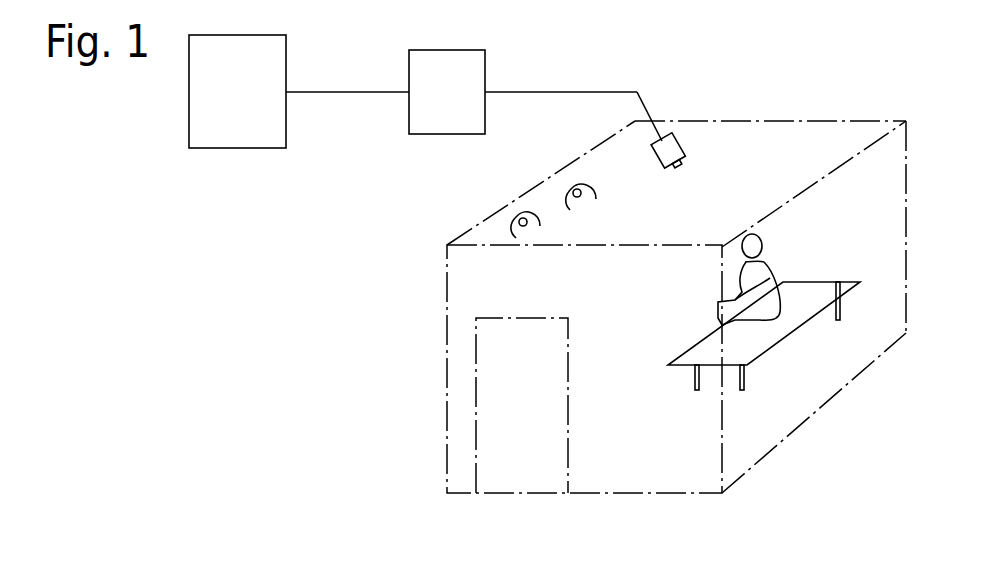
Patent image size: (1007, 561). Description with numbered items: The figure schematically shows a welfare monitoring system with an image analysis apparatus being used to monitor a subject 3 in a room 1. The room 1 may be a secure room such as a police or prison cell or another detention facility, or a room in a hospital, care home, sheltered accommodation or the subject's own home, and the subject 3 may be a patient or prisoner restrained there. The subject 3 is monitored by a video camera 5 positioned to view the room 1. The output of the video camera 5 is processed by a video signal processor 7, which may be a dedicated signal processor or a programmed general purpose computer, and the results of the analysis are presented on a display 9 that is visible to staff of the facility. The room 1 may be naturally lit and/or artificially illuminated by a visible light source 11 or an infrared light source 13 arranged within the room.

The room 1 is at (853, 121).
The subject 3 is at (777, 262).
The video camera 5 is at (674, 152).
The video signal processor 7 is at (430, 125).
The display 9 is at (228, 130).
The visible light source 11 is at (574, 189).
The infrared light source 13 is at (520, 219).